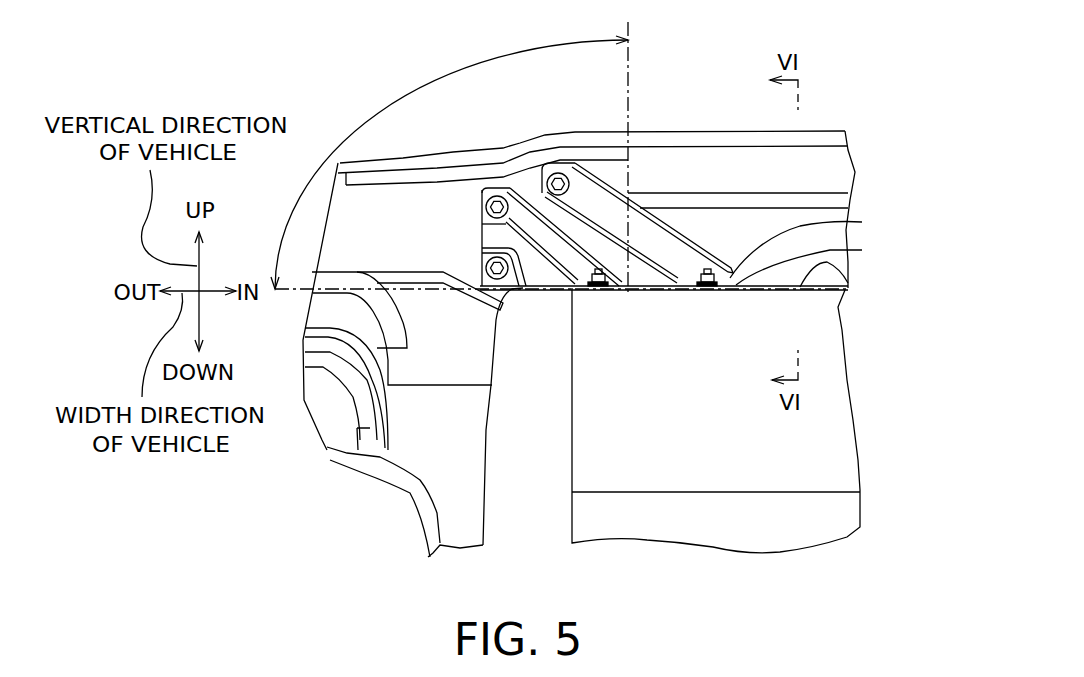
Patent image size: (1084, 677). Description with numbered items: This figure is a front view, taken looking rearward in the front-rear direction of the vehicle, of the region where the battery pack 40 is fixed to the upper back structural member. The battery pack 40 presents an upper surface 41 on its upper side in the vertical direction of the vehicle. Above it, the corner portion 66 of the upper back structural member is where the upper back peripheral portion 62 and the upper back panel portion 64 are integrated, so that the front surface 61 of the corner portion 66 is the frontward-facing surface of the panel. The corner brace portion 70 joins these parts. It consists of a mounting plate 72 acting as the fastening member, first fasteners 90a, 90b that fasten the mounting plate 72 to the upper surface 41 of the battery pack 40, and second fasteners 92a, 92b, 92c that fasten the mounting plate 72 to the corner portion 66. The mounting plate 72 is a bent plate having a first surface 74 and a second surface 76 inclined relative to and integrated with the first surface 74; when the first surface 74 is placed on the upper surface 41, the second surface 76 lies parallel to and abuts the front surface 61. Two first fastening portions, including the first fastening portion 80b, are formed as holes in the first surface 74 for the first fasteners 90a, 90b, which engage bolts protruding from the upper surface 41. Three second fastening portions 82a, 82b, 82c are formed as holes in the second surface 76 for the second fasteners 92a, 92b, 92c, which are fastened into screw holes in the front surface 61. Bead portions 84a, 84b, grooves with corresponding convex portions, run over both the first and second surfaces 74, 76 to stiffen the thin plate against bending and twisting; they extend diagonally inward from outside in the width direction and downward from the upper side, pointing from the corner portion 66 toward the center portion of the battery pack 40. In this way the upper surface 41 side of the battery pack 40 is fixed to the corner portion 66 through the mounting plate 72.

The battery pack 40 is at (700, 437).
The upper surface 41 is at (848, 270).
The front surface 61 is at (389, 252).
The upper back peripheral portion 62 is at (430, 432).
The upper back panel portion 64 is at (823, 158).
The corner portion 66 is at (418, 86).
The corner brace portion 70 is at (703, 235).
The mounting plate 72 is at (887, 208).
The first surface 74 is at (813, 261).
The second surface 76 is at (810, 245).
The first fastening portion 80b is at (603, 295).
The second fastening portion 82a is at (542, 188).
The second fastening portion 82b is at (503, 183).
The second fastening portion 82c is at (482, 268).
The bead portion 84a is at (647, 268).
The bead portion 84b is at (543, 268).
The first fastener 90a is at (710, 284).
The first fastener 90b is at (586, 280).
The second fastener 92a is at (541, 130).
The second fastener 92b is at (481, 148).
The second fastener 92c is at (451, 183).